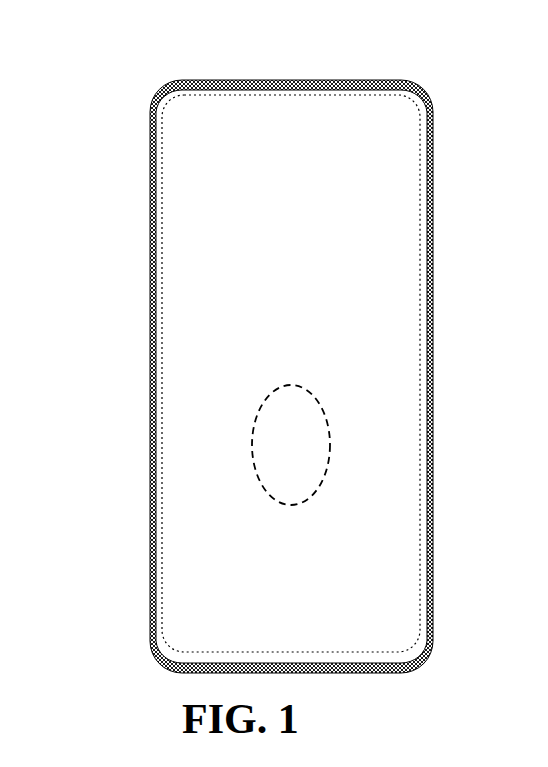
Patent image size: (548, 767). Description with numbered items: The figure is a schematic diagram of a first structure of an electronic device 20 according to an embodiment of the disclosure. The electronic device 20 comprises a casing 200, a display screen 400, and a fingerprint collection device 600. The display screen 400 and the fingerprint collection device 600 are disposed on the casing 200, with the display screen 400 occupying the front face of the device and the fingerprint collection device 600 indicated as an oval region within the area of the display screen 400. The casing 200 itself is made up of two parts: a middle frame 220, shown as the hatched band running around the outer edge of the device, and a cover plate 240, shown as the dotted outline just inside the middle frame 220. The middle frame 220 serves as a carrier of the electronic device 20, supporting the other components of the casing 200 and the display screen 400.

The electronic device 20 is at (116, 46).
The casing 200 is at (80, 232).
The middle frame 220 is at (152, 247).
The cover plate 240 is at (163, 287).
The display screen 400 is at (395, 213).
The fingerprint collection device 600 is at (331, 440).